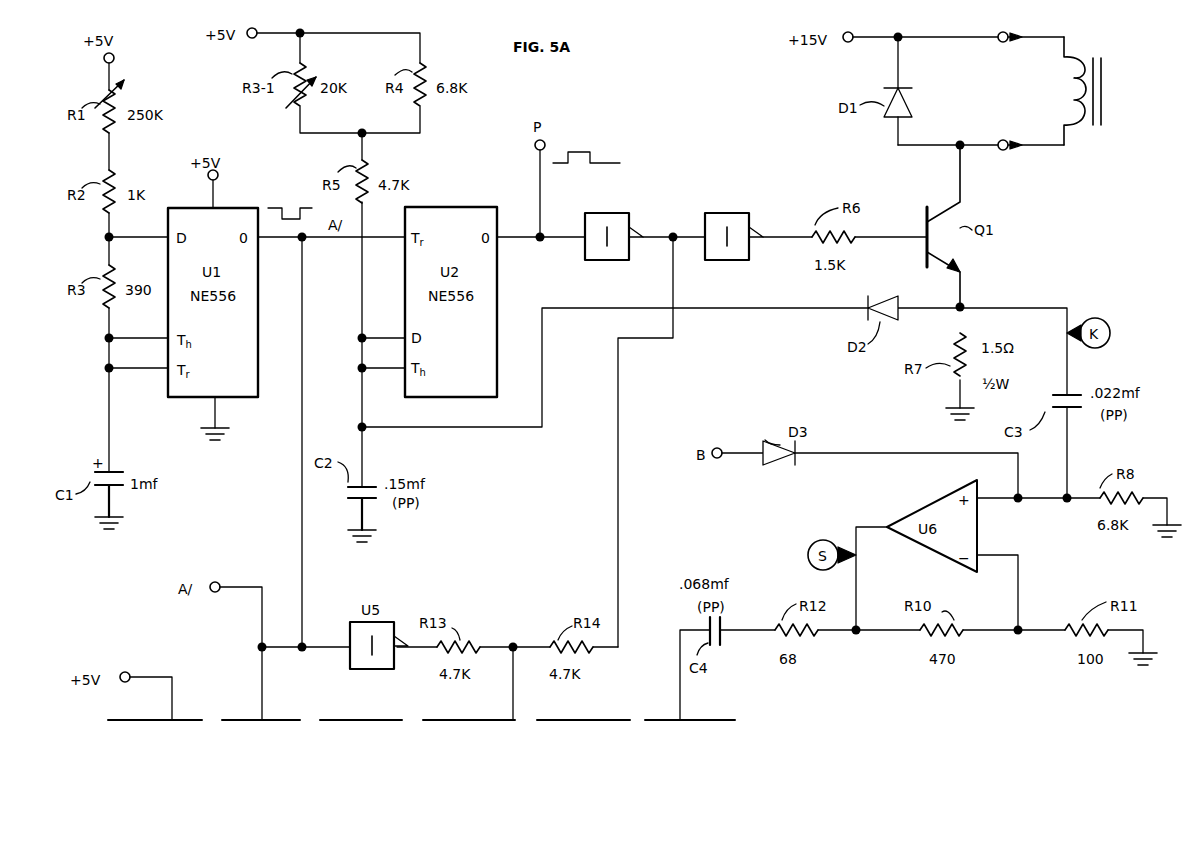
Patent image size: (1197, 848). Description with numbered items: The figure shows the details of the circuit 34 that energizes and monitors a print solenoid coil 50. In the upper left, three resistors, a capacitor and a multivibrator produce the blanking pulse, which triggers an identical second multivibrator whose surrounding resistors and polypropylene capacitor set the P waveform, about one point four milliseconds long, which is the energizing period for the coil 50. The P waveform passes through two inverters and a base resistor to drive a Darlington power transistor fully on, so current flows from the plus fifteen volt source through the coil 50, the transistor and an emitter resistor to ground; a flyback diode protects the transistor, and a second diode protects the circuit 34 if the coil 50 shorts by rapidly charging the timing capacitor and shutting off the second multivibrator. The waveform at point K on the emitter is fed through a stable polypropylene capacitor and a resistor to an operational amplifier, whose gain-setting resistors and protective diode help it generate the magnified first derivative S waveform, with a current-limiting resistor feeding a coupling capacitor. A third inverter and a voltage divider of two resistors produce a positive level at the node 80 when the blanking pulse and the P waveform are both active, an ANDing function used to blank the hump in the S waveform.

The circuit 34 is at (681, 153).
The coil 50 is at (1064, 96).
The node 80 is at (514, 642).